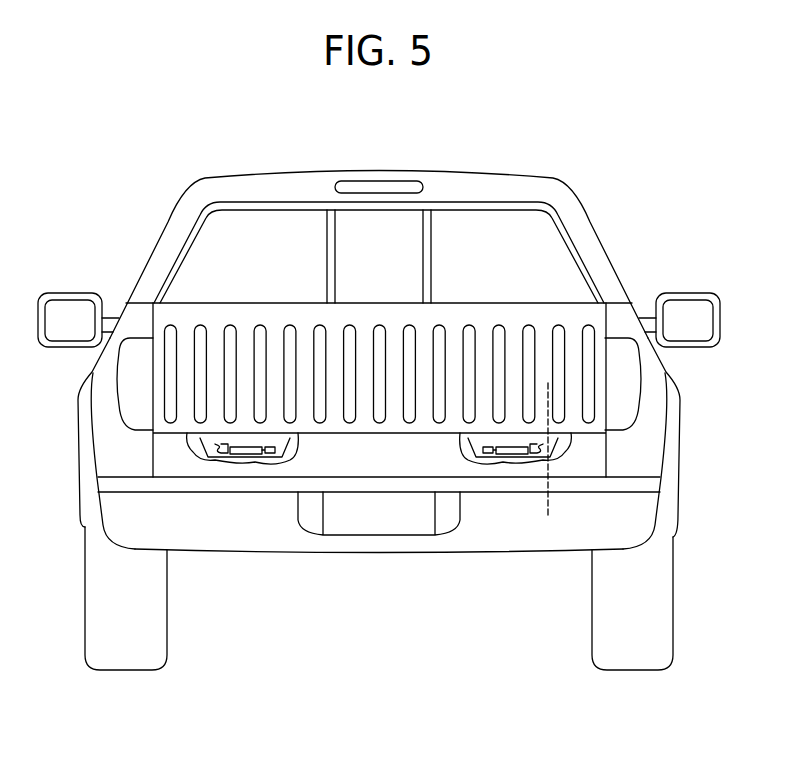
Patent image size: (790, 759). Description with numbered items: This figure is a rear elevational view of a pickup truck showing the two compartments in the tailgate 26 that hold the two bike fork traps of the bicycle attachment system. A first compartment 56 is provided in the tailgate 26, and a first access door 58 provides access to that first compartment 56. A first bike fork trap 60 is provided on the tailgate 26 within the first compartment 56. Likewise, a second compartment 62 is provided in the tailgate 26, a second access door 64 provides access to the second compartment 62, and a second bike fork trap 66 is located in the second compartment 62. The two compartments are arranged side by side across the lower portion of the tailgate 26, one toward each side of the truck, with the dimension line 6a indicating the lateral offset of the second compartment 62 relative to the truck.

The vehicle longitudinal axis offset 6a is at (552, 393).
The tailgate 26 is at (167, 456).
The first compartment 56 is at (275, 447).
The first access door 58 is at (222, 435).
The first bike fork trap 60 is at (238, 455).
The second compartment 62 is at (550, 444).
The second access door 64 is at (512, 435).
The second bike fork trap 66 is at (507, 440).